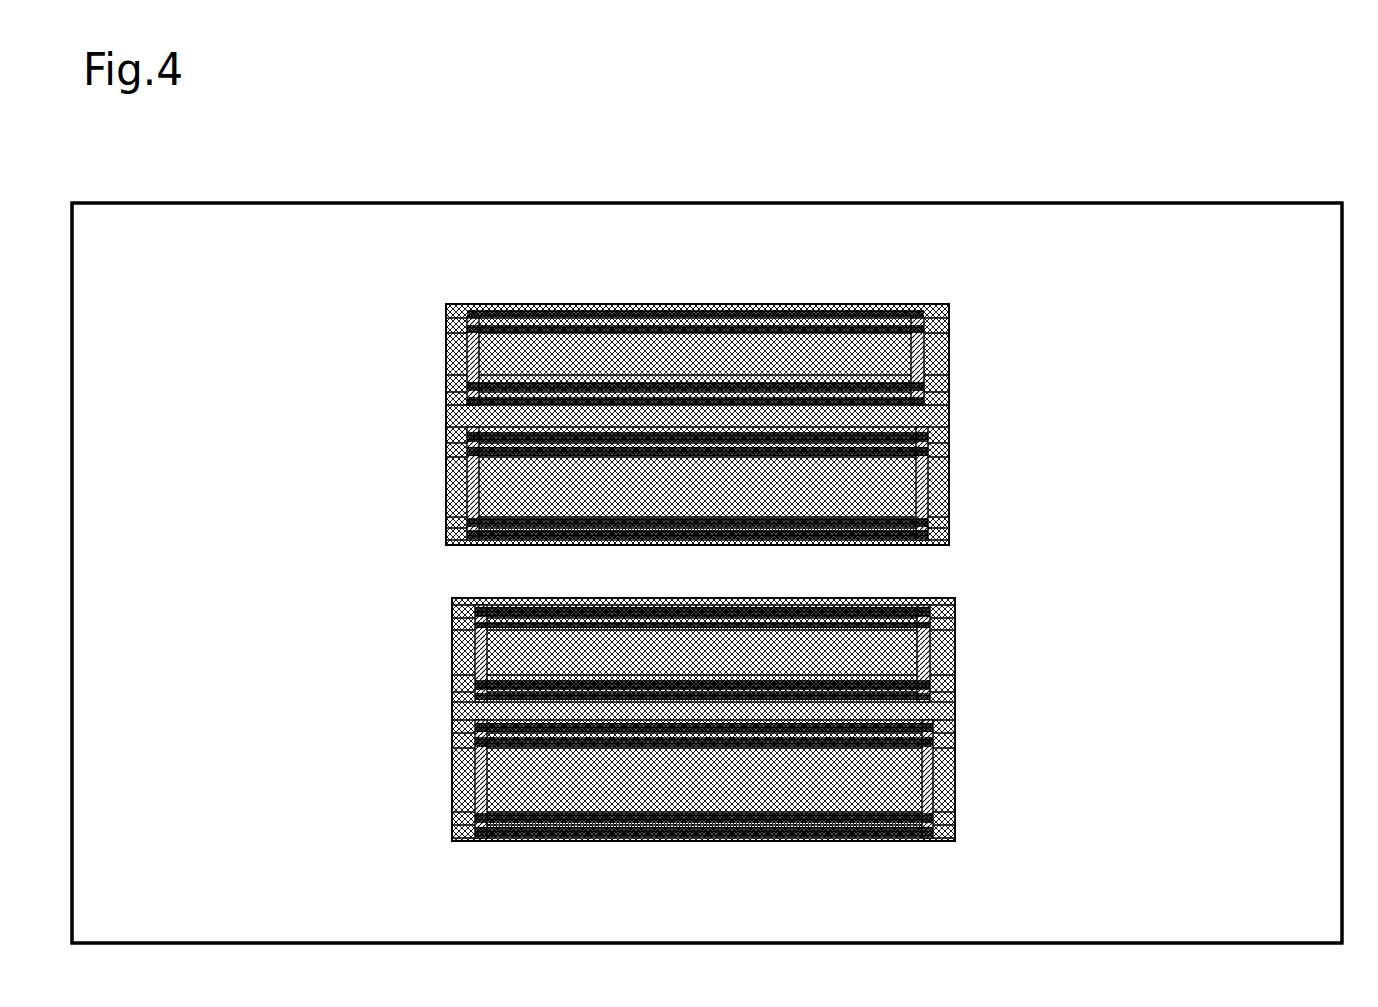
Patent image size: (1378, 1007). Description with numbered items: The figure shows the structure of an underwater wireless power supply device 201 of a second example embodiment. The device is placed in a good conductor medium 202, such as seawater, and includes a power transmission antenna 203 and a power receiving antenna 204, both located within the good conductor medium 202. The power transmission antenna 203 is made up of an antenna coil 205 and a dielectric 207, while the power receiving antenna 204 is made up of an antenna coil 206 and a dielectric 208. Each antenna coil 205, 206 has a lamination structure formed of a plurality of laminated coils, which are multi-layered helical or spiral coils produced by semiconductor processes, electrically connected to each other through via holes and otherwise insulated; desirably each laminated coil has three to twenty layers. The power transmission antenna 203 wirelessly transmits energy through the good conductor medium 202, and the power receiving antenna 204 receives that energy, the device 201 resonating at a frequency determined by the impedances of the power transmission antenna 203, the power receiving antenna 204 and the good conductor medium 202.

The underwater wireless power supply device 201 is at (680, 183).
The good conductor medium 202 is at (168, 203).
The power transmission antenna 203 is at (953, 347).
The power receiving antenna 204 is at (960, 607).
The antenna coil 205 is at (425, 311).
The antenna coil 206 is at (423, 607).
The dielectric 207 is at (943, 473).
The dielectric 208 is at (957, 778).